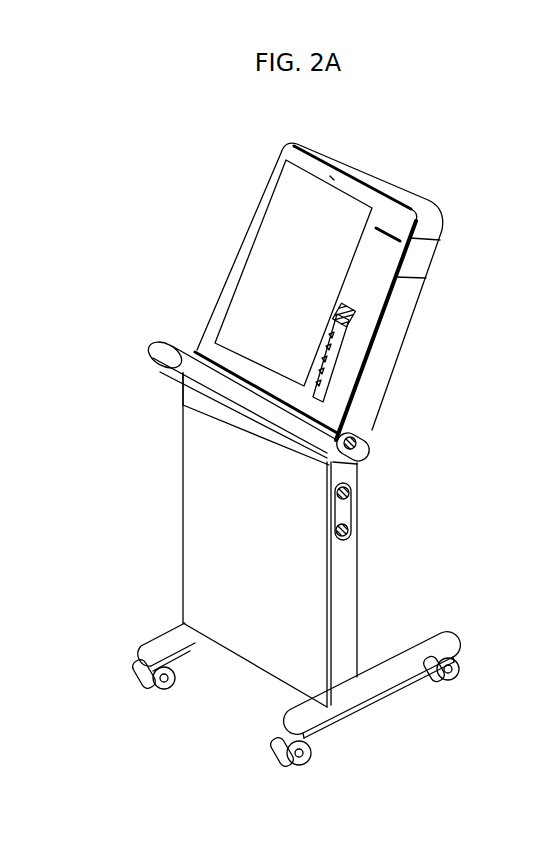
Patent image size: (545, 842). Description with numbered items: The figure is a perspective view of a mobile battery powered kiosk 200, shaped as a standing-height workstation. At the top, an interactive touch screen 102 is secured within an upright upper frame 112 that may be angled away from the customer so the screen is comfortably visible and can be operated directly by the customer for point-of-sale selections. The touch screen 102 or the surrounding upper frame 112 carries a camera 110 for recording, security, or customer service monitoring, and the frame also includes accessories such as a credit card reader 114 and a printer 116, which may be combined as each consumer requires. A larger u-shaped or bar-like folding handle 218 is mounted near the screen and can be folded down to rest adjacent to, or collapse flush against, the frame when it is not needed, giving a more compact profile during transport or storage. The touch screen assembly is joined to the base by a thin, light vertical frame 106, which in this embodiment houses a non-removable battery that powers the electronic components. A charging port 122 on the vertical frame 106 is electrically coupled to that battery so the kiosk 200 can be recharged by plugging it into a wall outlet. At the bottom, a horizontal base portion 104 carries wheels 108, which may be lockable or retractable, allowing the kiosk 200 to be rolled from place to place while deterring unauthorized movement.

The mobile battery powered kiosk 200 is at (138, 174).
The interactive touch screen 102 is at (318, 252).
The camera 110 is at (328, 173).
The upper frame 112 is at (403, 297).
The printer 116 is at (392, 229).
The credit card reader 114 is at (332, 360).
The folding handle 218 is at (157, 352).
The vertical frame 106 is at (183, 507).
The charging port 122 is at (350, 523).
The base portion 104 is at (432, 635).
The wheels 108 is at (274, 757).